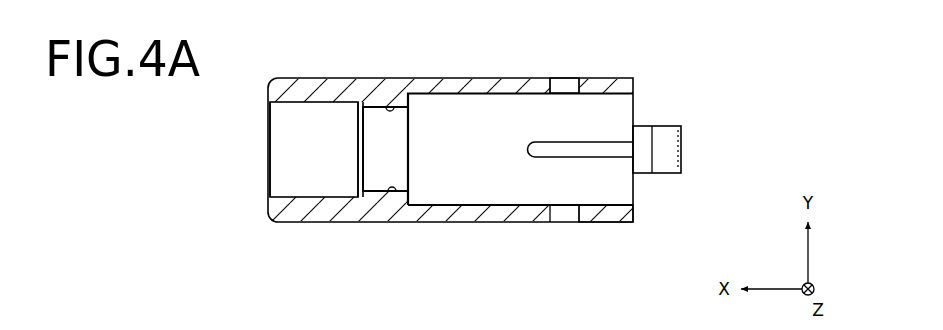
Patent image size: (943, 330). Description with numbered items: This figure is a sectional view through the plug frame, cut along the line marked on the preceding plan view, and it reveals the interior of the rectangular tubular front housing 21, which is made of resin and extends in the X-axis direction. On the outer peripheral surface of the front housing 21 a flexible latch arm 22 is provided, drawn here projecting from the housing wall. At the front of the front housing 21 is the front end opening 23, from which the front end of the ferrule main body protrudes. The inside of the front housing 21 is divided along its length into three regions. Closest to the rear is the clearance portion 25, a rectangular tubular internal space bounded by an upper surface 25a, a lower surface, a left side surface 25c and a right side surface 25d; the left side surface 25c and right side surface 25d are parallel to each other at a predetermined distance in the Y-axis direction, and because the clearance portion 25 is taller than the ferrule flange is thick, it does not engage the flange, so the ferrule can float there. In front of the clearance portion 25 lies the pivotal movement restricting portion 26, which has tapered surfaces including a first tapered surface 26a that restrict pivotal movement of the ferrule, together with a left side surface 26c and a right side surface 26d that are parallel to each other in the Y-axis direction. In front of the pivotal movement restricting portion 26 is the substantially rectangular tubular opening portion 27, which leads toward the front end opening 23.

The front housing 21 is at (268, 79).
The latch arm 22 is at (670, 128).
The front end opening 23 is at (268, 143).
The clearance portion 25 is at (447, 127).
The upper surface 25a is at (592, 198).
The left side surface 25c is at (528, 200).
The right side surface 25d is at (532, 92).
The pivotal movement restricting portion 26 is at (373, 127).
The first tapered surface 26a is at (404, 153).
The left side surface 26c is at (392, 192).
The right side surface 26d is at (390, 107).
The opening portion 27 is at (298, 161).